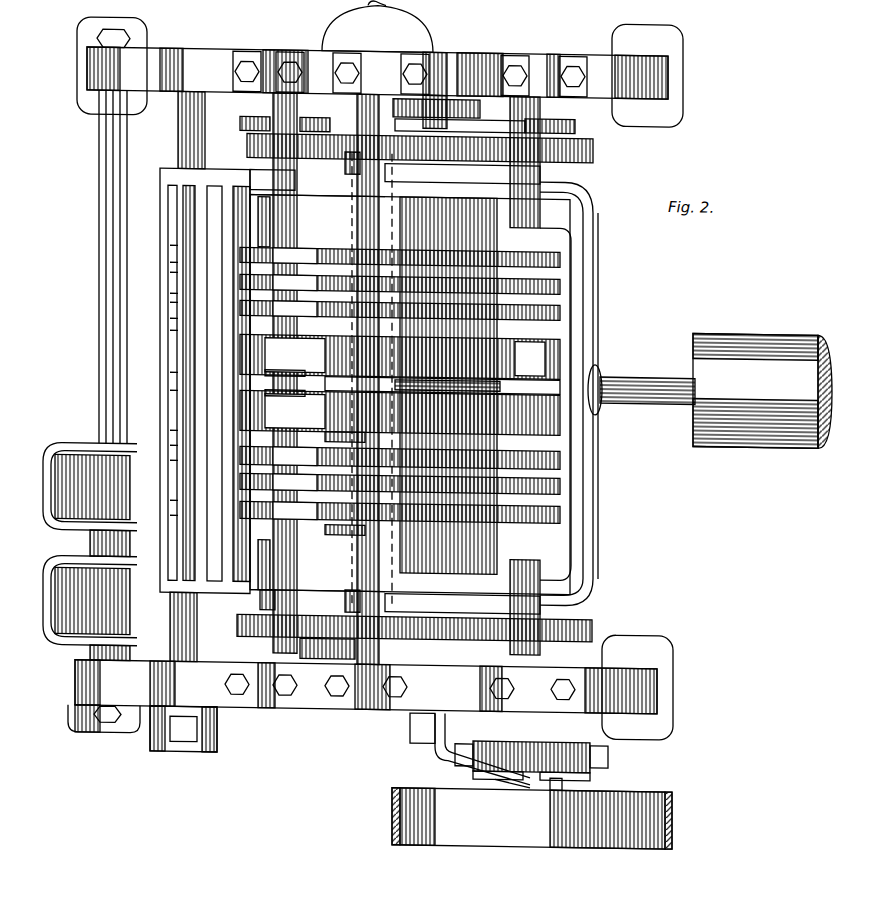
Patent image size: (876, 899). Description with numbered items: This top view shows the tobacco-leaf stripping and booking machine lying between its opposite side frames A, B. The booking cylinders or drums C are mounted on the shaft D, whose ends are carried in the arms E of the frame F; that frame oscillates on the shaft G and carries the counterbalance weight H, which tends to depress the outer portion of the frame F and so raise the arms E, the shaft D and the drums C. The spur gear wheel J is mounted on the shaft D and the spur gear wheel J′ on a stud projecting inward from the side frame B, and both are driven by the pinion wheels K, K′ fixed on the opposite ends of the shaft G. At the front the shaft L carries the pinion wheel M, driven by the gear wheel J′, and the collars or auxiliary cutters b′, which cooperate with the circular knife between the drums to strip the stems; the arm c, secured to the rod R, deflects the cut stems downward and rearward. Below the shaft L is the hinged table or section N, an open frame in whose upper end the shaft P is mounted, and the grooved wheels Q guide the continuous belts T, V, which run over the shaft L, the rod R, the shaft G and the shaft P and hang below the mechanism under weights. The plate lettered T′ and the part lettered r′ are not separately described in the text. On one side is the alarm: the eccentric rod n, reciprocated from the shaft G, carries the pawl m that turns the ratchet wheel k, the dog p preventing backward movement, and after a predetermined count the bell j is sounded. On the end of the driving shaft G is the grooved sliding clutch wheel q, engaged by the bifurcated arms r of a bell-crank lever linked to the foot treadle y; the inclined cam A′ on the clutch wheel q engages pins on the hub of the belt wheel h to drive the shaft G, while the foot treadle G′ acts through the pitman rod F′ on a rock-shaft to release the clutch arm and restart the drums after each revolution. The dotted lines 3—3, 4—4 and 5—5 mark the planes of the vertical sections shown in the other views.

The side frame A is at (380, 72).
The inclined cam A′ is at (507, 796).
The side frame B is at (374, 683).
The booking cylinder C is at (410, 395).
The shaft D is at (385, 188).
The arm E is at (462, 388).
The frame F is at (641, 432).
The pitman rod F′ is at (322, 659).
The driving shaft G is at (560, 441).
The foot treadle G′ is at (90, 591).
The counterbalance weight H is at (762, 390).
The spur gear wheel J is at (341, 163).
The spur gear wheel J′ is at (339, 601).
The pinion wheel K is at (431, 148).
The pinion wheel K′ is at (423, 618).
The shaft L is at (285, 186).
The pinion wheel M is at (284, 601).
The hinged table or section N is at (160, 236).
The shaft P is at (270, 213).
The grooved wheel Q is at (330, 490).
The rod R is at (337, 386).
The continuous belt T is at (400, 470).
The type plate T′ is at (400, 383).
The continuous belt V is at (400, 384).
The collar or auxiliary cutter b′ is at (285, 381).
The arm c is at (442, 388).
The belt wheel h is at (532, 818).
The bell j is at (377, 26).
The ratchet wheel k is at (448, 108).
The pawl m is at (285, 122).
The eccentric rod n is at (511, 126).
The dog p is at (460, 125).
The clutch wheel q is at (531, 746).
The bifurcated arms r is at (570, 768).
The ratchet r′ is at (498, 750).
The foot treadle y is at (90, 478).
The dotted section line 3 is at (300, 127).
The dotted section line 4 is at (760, 666).
The dotted section line 5 is at (740, 381).